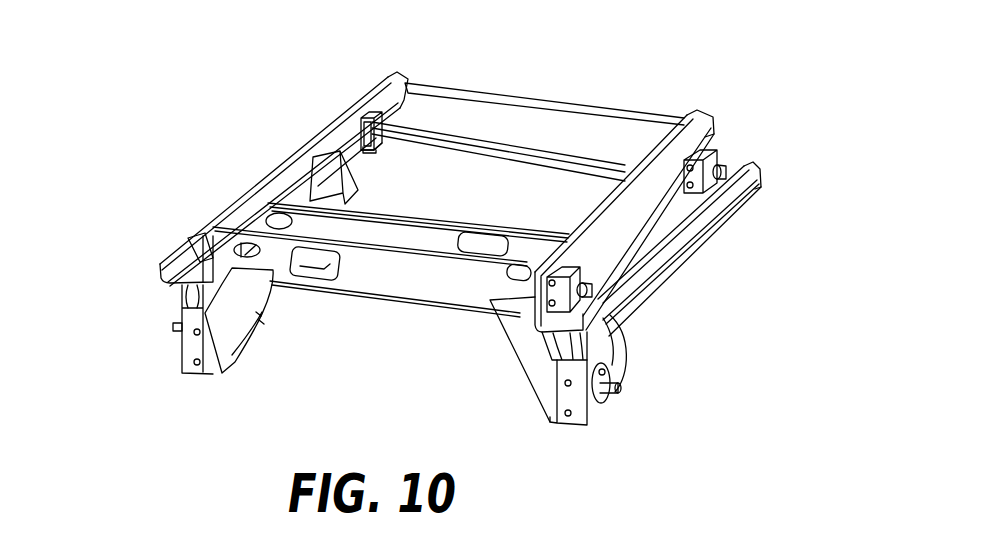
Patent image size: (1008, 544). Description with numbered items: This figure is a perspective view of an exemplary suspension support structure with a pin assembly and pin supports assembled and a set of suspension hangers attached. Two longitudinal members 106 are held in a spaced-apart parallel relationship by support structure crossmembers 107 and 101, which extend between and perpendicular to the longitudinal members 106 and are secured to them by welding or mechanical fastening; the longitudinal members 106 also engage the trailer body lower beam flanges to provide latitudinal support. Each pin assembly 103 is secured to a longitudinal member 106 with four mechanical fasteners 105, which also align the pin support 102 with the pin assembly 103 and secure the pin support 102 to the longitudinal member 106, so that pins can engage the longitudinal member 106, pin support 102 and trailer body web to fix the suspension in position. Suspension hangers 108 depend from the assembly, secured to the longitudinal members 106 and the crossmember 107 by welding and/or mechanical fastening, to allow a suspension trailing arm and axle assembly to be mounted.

The support structure crossmember 101 is at (632, 105).
The pin support 102 is at (362, 96).
The pin assembly 103 is at (386, 111).
The mechanical fastener 105 is at (376, 155).
The longitudinal member 106 is at (688, 257).
The support structure crossmember 107 is at (371, 304).
The suspension hanger 108 is at (190, 381).